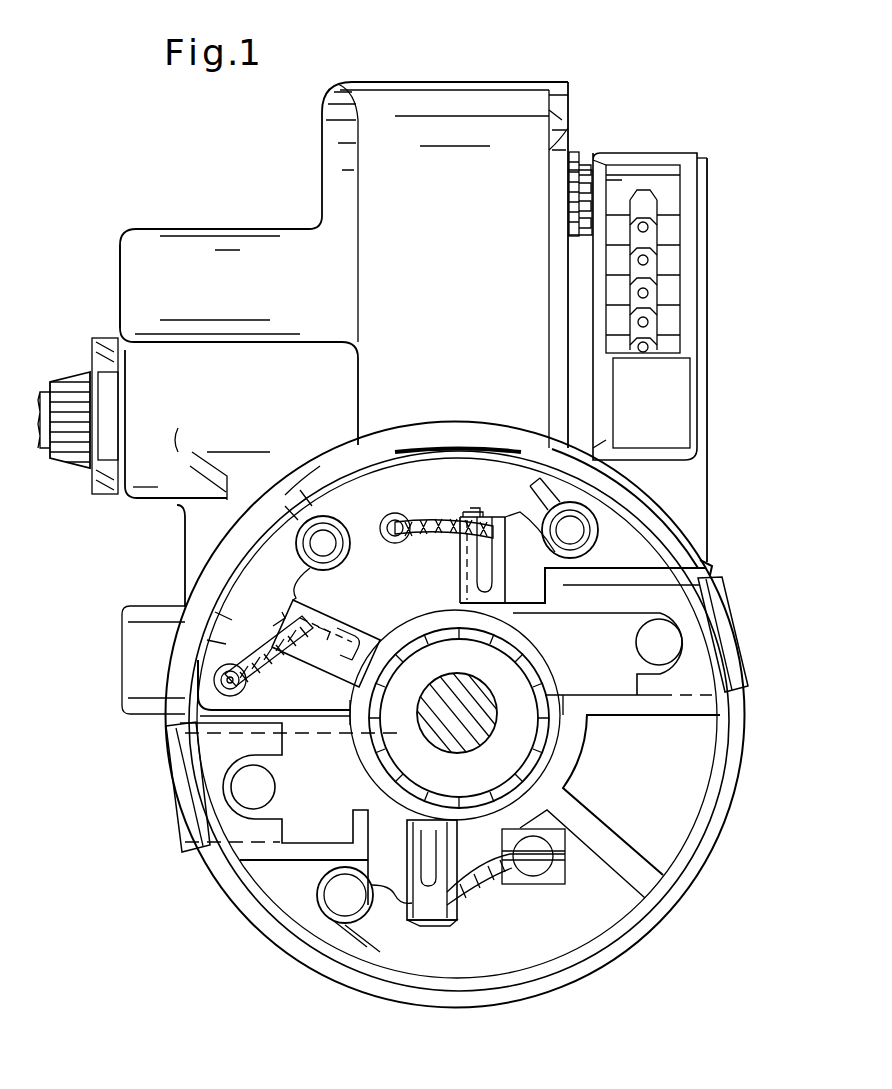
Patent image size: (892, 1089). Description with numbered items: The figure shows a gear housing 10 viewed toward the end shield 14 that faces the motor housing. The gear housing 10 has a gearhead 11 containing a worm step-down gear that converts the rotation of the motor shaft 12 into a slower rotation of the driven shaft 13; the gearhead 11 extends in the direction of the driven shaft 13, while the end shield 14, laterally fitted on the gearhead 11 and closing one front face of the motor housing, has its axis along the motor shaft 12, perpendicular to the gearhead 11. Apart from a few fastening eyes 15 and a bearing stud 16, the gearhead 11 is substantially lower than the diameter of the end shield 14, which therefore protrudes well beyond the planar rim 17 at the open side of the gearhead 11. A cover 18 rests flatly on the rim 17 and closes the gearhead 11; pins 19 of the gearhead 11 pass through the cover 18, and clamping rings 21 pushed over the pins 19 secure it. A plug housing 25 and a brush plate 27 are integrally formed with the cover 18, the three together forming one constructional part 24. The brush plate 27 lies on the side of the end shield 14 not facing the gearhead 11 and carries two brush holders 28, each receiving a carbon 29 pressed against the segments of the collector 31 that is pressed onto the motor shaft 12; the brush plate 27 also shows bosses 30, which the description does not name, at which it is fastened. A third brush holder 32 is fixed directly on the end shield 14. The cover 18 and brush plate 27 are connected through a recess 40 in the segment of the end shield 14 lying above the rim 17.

The gear housing 10 is at (452, 70).
The gearhead 11 is at (488, 176).
The motor shaft 12 is at (495, 722).
The driven shaft 13 is at (94, 470).
The end shield 14 is at (733, 778).
The fastening eyes 15 is at (196, 258).
The bearing stud 16 is at (140, 498).
The planar rim 17 is at (570, 112).
The cover 18 is at (560, 96).
The pins 19 is at (570, 178).
The clamping rings 21 is at (588, 134).
The constructional part 24 is at (712, 496).
The plug housing 25 is at (698, 206).
The brush plate 27 is at (217, 645).
The brush holders 28 is at (458, 566).
The carbon 29 is at (438, 610).
The fastening boss 30 is at (318, 518).
The collector 31 is at (500, 668).
The third brush holder 32 is at (458, 902).
The recess 40 is at (698, 558).